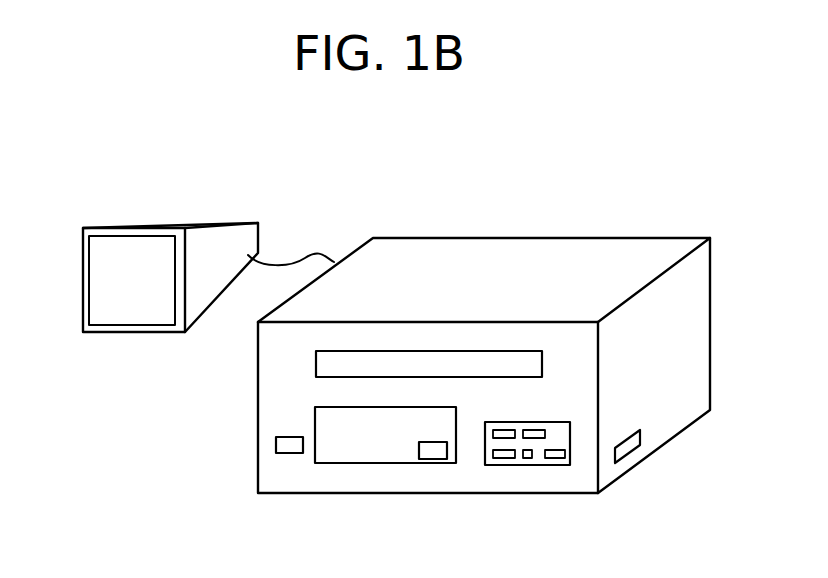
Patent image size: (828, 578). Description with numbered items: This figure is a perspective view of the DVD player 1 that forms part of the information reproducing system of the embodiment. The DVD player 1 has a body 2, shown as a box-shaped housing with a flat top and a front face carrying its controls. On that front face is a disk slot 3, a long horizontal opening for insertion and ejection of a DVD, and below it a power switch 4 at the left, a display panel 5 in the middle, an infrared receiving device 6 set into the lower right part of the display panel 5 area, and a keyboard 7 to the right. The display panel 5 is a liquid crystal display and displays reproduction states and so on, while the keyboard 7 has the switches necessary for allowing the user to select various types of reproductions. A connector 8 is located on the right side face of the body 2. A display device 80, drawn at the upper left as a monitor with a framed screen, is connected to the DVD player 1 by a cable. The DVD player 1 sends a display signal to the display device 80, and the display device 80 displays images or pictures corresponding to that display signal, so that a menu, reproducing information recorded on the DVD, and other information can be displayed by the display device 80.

The DVD player 1 is at (232, 349).
The body 2 is at (645, 240).
The disk slot 3 is at (316, 366).
The power switch 4 is at (276, 445).
The display panel 5 is at (332, 458).
The infrared receiving device 6 is at (437, 457).
The keyboard 7 is at (530, 458).
The connector 8 is at (630, 450).
The display device 80 is at (138, 225).